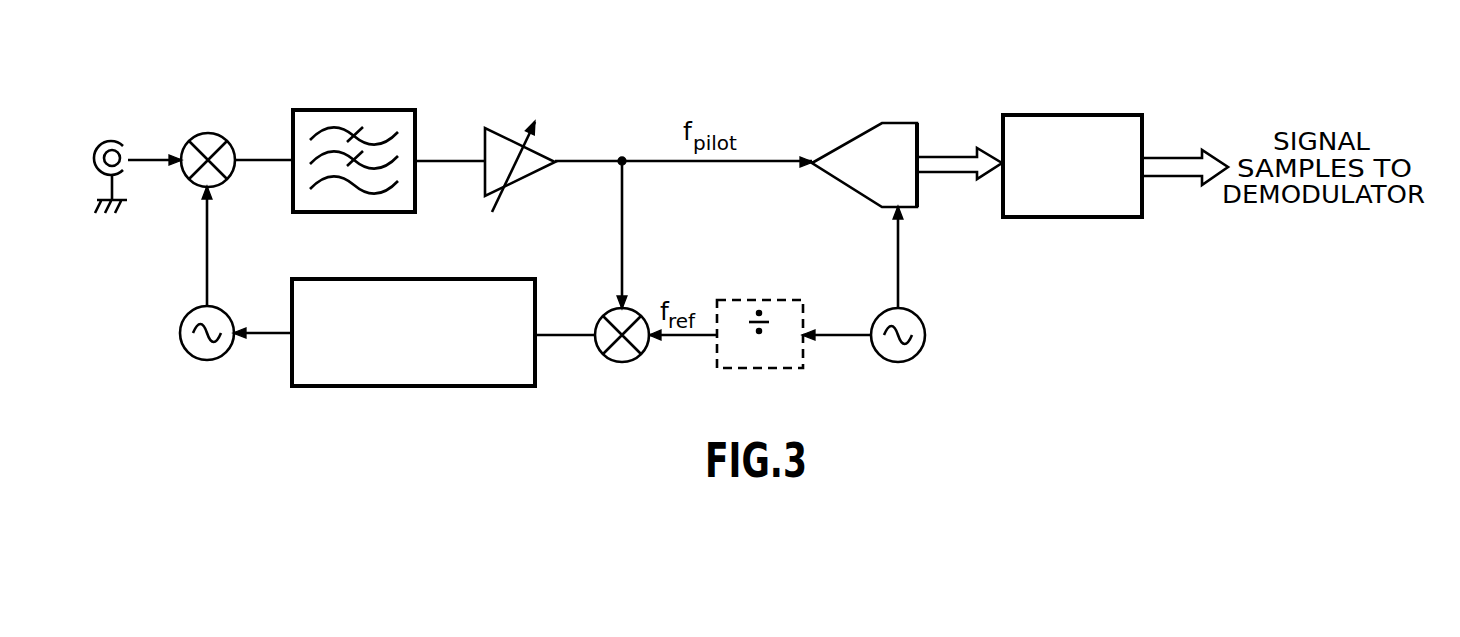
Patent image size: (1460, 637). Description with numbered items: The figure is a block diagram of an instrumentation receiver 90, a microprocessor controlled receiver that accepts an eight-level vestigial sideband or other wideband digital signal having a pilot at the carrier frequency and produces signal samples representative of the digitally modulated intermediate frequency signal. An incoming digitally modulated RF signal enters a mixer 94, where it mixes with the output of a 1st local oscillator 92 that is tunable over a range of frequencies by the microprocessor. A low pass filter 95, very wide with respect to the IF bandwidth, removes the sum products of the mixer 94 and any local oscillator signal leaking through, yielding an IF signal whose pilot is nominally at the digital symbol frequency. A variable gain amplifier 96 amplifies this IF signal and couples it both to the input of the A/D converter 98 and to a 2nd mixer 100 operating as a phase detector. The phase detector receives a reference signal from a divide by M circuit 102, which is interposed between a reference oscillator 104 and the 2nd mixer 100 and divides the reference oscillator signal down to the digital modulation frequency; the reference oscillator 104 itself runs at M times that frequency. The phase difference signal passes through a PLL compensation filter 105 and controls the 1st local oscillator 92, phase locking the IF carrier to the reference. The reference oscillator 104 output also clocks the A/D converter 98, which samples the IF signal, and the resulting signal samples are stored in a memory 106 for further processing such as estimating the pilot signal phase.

The instrumentation receiver 90 is at (777, 93).
The 1st local oscillator 92 is at (180, 333).
The mixer 94 is at (208, 133).
The low pass filter 95 is at (380, 110).
The variable gain amplifier 96 is at (507, 135).
The A/D converter 98 is at (900, 123).
The 2nd mixer 100 is at (620, 362).
The divide by M circuit 102 is at (775, 300).
The reference oscillator 104 is at (925, 335).
The PLL compensation filter 105 is at (437, 279).
The memory 106 is at (1097, 115).